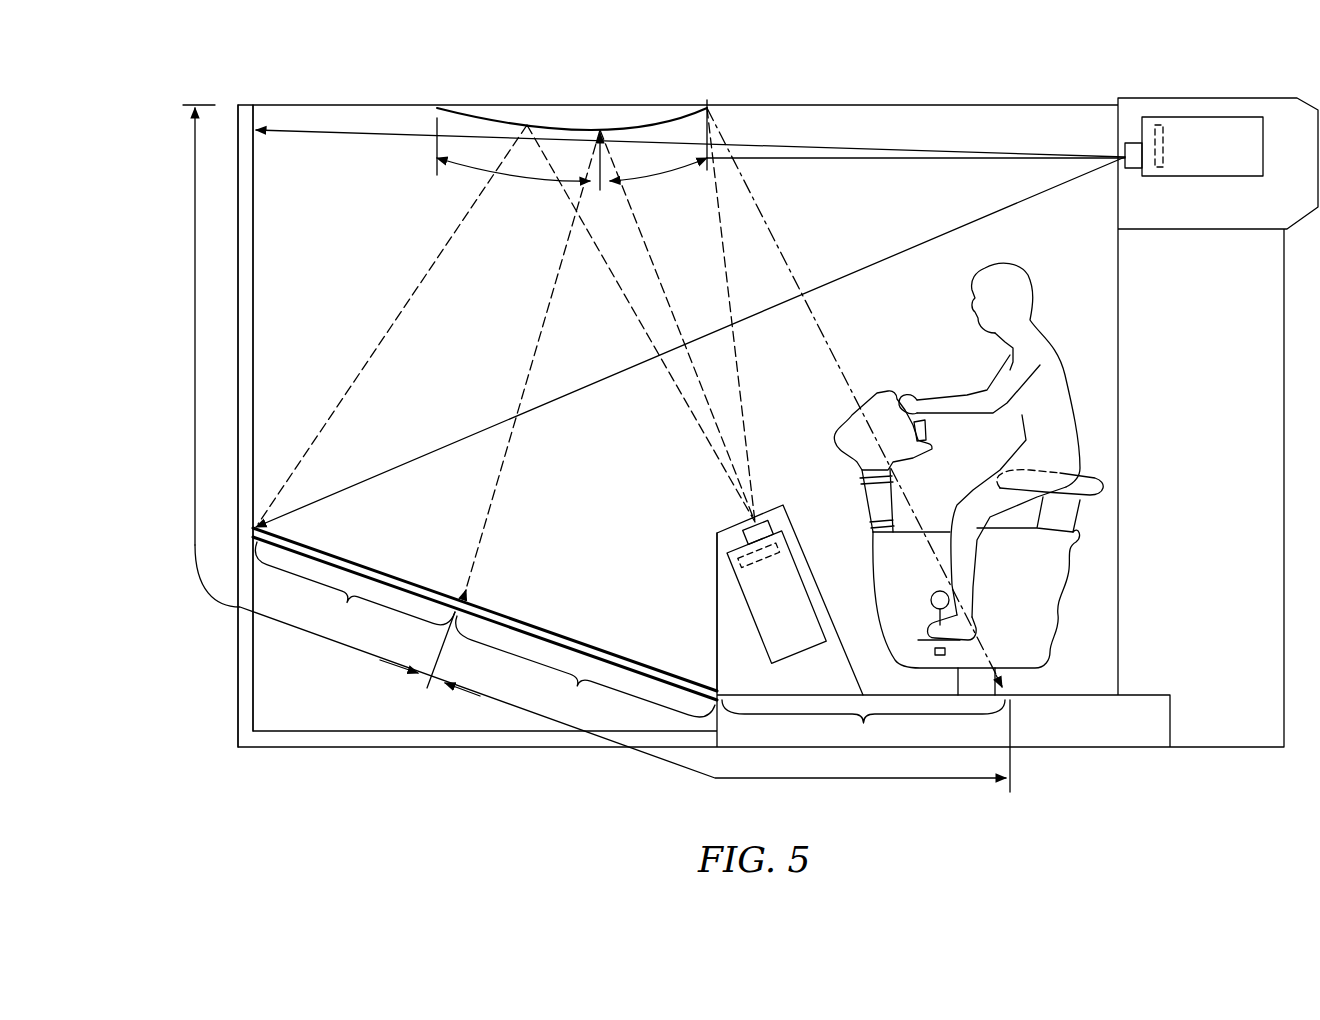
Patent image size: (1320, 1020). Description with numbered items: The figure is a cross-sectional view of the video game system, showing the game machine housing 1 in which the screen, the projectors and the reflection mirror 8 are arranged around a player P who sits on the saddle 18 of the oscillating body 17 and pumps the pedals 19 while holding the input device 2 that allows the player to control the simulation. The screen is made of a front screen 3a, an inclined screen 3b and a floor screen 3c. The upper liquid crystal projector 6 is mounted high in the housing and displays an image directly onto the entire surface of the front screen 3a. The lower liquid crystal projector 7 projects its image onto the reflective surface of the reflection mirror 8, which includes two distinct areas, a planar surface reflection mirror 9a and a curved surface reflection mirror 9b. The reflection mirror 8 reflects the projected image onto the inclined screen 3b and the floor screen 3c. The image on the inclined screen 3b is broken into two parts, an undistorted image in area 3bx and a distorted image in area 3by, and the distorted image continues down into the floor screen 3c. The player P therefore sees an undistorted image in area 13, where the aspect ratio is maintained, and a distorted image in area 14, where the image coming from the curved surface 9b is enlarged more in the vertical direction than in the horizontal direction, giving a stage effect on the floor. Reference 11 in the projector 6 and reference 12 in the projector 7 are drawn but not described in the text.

The game machine housing 1 is at (871, 103).
The input device 2 is at (830, 451).
The front screen 3a is at (256, 250).
The inclined screen 3b is at (515, 618).
The area of inclined screen with undistorted image 3bx is at (367, 619).
The area of inclined screen with distorted image 3by is at (585, 666).
The floor screen 3c is at (863, 725).
The upper liquid crystal projector 6 is at (1218, 137).
The lower liquid crystal projector 7 is at (765, 608).
The reflection mirror 8 is at (570, 117).
The planar surface reflection mirror 9a is at (532, 176).
The curved surface reflection mirror 9b is at (668, 178).
The projector lens element 11 is at (1160, 120).
The camera sensor 12 is at (742, 568).
The area of undistorted image 13 is at (197, 215).
The area of distorted image 14 is at (648, 758).
The oscillating body 17 is at (1045, 625).
The saddle 18 is at (1100, 490).
The pedals 19 is at (935, 652).
The player P is at (1010, 285).